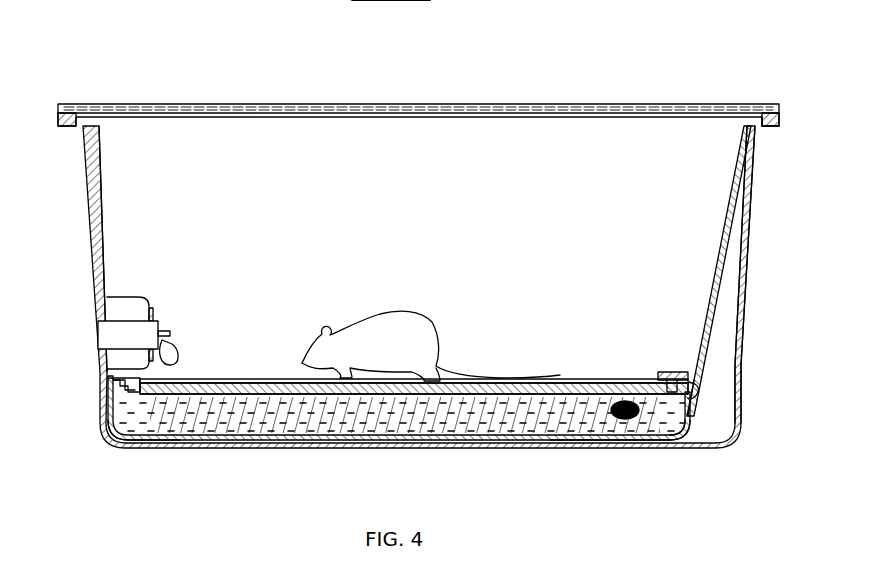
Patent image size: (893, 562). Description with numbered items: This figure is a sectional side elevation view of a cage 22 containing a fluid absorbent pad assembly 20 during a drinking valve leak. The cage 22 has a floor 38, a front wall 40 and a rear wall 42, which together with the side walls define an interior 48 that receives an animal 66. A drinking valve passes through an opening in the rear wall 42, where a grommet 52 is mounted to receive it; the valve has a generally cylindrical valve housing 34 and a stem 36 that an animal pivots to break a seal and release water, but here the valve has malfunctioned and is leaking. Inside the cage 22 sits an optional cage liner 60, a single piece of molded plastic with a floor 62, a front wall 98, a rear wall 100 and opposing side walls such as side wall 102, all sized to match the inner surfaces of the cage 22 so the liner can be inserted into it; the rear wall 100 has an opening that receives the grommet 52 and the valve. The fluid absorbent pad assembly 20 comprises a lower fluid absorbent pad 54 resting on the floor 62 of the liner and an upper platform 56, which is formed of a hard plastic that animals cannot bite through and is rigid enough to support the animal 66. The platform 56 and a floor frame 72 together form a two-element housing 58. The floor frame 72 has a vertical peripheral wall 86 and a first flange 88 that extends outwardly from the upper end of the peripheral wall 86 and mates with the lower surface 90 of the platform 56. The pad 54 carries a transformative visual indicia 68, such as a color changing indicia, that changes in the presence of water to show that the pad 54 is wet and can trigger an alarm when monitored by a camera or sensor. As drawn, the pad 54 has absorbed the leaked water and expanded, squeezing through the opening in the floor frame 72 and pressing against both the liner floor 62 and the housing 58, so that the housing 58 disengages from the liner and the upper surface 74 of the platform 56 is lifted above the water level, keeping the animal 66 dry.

The fluid absorbent pad assembly 20 is at (95, 59).
The cage 22 is at (748, 206).
The valve housing 34 is at (163, 330).
The stem 36 is at (170, 332).
The floor 38 is at (328, 450).
The front wall 40 is at (753, 149).
The rear wall 42 is at (88, 168).
The interior 48 is at (621, 136).
The grommet 52 is at (120, 298).
The fluid absorbent pad 54 is at (175, 450).
The platform 56 is at (204, 378).
The housing 58 is at (656, 352).
The cage liner 60 is at (728, 270).
The floor 62 is at (584, 447).
The animal 66 is at (424, 327).
The transformative visual indicia 68 is at (628, 420).
The floor frame 72 is at (113, 385).
The upper surface 74 is at (557, 376).
The peripheral wall 86 is at (699, 388).
The first flange 88 is at (690, 390).
The lower surface 90 is at (712, 345).
The front wall 98 is at (732, 180).
The rear wall 100 is at (102, 200).
The side wall 102 is at (386, 222).